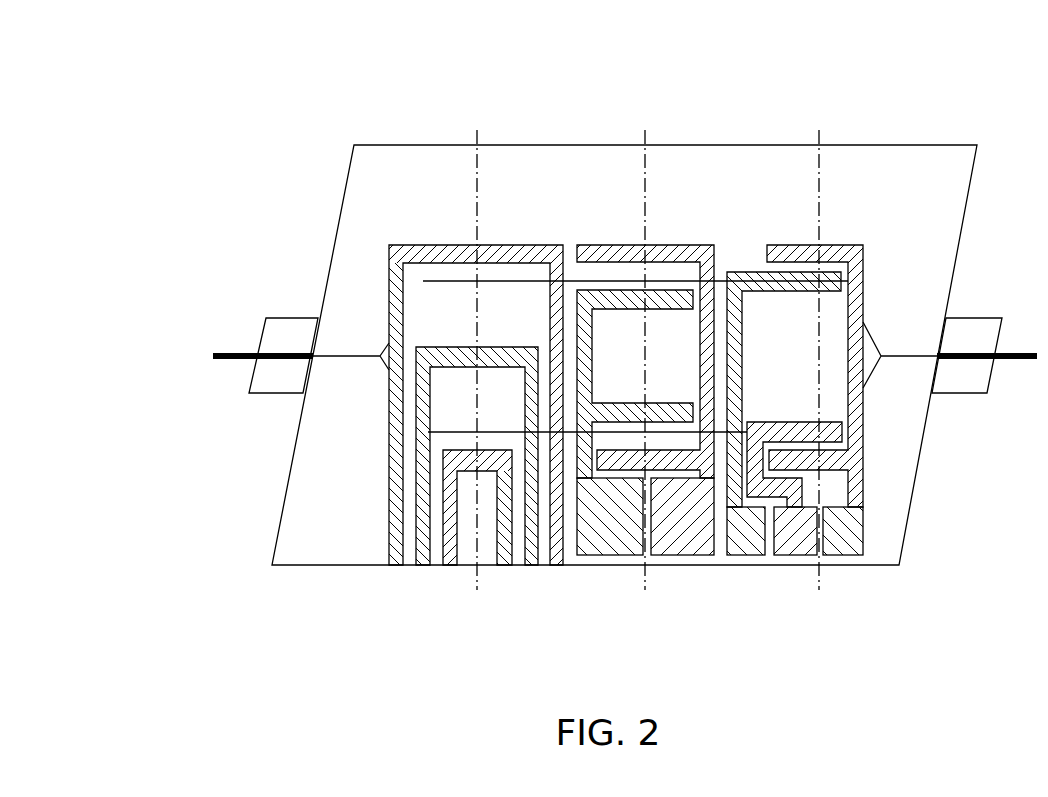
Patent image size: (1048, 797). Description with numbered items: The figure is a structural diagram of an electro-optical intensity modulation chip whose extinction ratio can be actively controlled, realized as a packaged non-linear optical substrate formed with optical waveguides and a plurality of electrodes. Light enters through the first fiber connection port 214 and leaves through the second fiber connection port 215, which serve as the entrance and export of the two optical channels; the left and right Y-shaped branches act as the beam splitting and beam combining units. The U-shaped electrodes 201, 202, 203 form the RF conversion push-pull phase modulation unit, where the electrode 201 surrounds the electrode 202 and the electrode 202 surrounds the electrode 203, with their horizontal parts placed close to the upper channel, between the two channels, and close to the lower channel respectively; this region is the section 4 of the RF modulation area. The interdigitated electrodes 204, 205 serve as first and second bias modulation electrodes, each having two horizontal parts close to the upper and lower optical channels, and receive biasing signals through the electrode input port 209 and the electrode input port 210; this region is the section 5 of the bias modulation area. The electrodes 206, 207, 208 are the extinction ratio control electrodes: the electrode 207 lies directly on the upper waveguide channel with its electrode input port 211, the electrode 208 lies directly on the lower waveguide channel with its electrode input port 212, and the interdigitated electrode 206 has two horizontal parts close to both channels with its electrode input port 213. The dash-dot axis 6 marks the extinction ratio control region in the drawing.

The section of the RF modulation area 4 is at (475, 582).
The section of the bias modulation area 5 is at (643, 582).
The third axis 6 is at (819, 582).
The first RF modulation electrode 201 is at (430, 247).
The second RF modulation electrode 202 is at (457, 347).
The third RF modulation electrode 203 is at (500, 450).
The first bias modulation electrode 204 is at (617, 247).
The second bias modulation electrode 205 is at (665, 290).
The first extinction ratio control electrode 206 is at (835, 245).
The second extinction ratio control electrode 207 is at (740, 272).
The third extinction ratio control electrode 208 is at (795, 425).
The electrode input port for bias modulation 209 is at (593, 548).
The electrode input port for bias modulation 210 is at (690, 548).
The electrode input port for extinction ratio control 211 is at (748, 548).
The electrode input port for extinction ratio control 212 is at (797, 548).
The electrode input port for extinction ratio control 213 is at (852, 522).
The first fiber connection port 214 is at (307, 385).
The second fiber connection port 215 is at (942, 330).